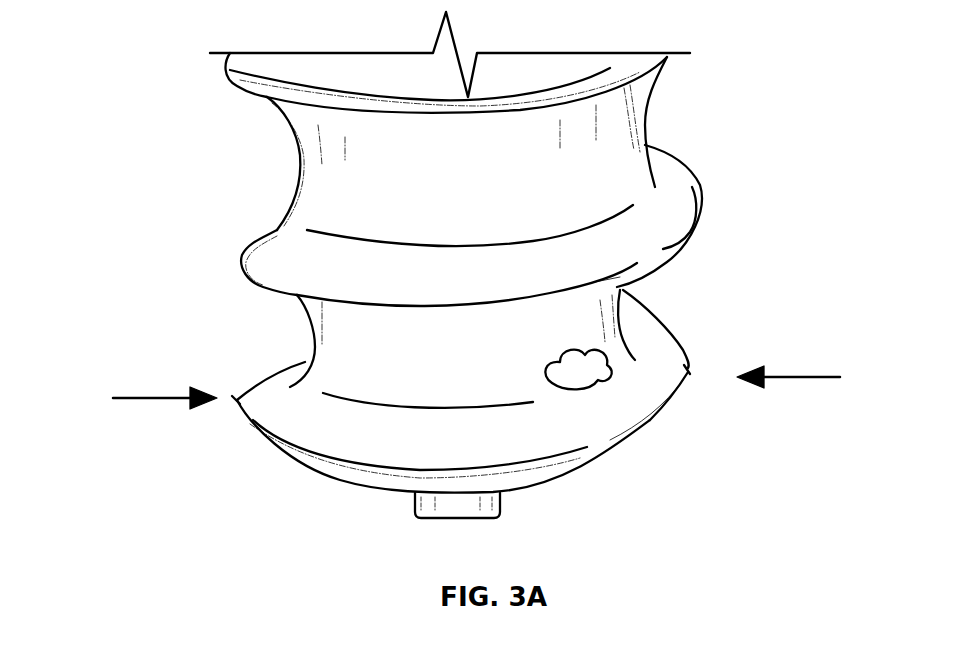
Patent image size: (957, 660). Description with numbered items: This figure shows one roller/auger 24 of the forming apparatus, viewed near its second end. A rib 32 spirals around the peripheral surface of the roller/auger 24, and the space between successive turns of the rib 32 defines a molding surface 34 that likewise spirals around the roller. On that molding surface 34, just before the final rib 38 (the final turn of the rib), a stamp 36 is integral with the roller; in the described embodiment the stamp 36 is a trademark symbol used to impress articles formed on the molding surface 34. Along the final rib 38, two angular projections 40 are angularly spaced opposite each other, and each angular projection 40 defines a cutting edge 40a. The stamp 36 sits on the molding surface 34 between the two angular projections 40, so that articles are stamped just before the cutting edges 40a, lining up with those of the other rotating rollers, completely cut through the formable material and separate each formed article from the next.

The roller/auger 24 is at (680, 123).
The rib 32 is at (238, 263).
The molding surface 34 is at (322, 178).
The stamp 36 is at (588, 373).
The final rib 38 is at (578, 452).
The angular projection 40 is at (237, 400).
The cutting edge 40a is at (222, 390).